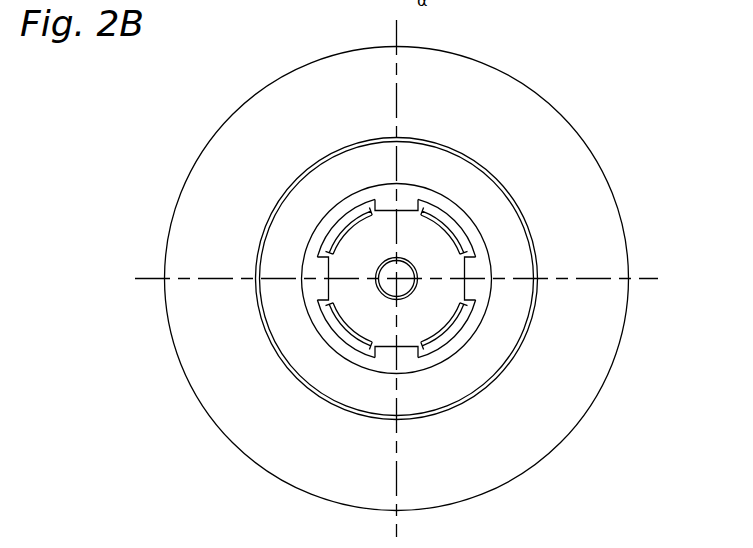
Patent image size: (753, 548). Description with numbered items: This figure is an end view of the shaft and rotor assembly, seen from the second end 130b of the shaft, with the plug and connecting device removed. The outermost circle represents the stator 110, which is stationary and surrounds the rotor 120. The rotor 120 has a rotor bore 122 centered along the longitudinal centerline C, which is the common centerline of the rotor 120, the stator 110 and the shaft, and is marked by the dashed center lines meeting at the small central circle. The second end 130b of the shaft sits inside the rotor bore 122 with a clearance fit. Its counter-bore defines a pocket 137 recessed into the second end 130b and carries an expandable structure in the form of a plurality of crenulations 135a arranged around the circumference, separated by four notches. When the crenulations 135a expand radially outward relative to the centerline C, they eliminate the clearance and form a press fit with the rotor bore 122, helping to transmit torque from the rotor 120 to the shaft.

The stator 110 is at (188, 213).
The rotor 120 is at (283, 322).
The rotor bore 122 is at (443, 203).
The second end of the shaft 130b is at (470, 303).
The crenulations 135a is at (342, 223).
The pocket 137 is at (433, 265).
The centerline C is at (397, 280).